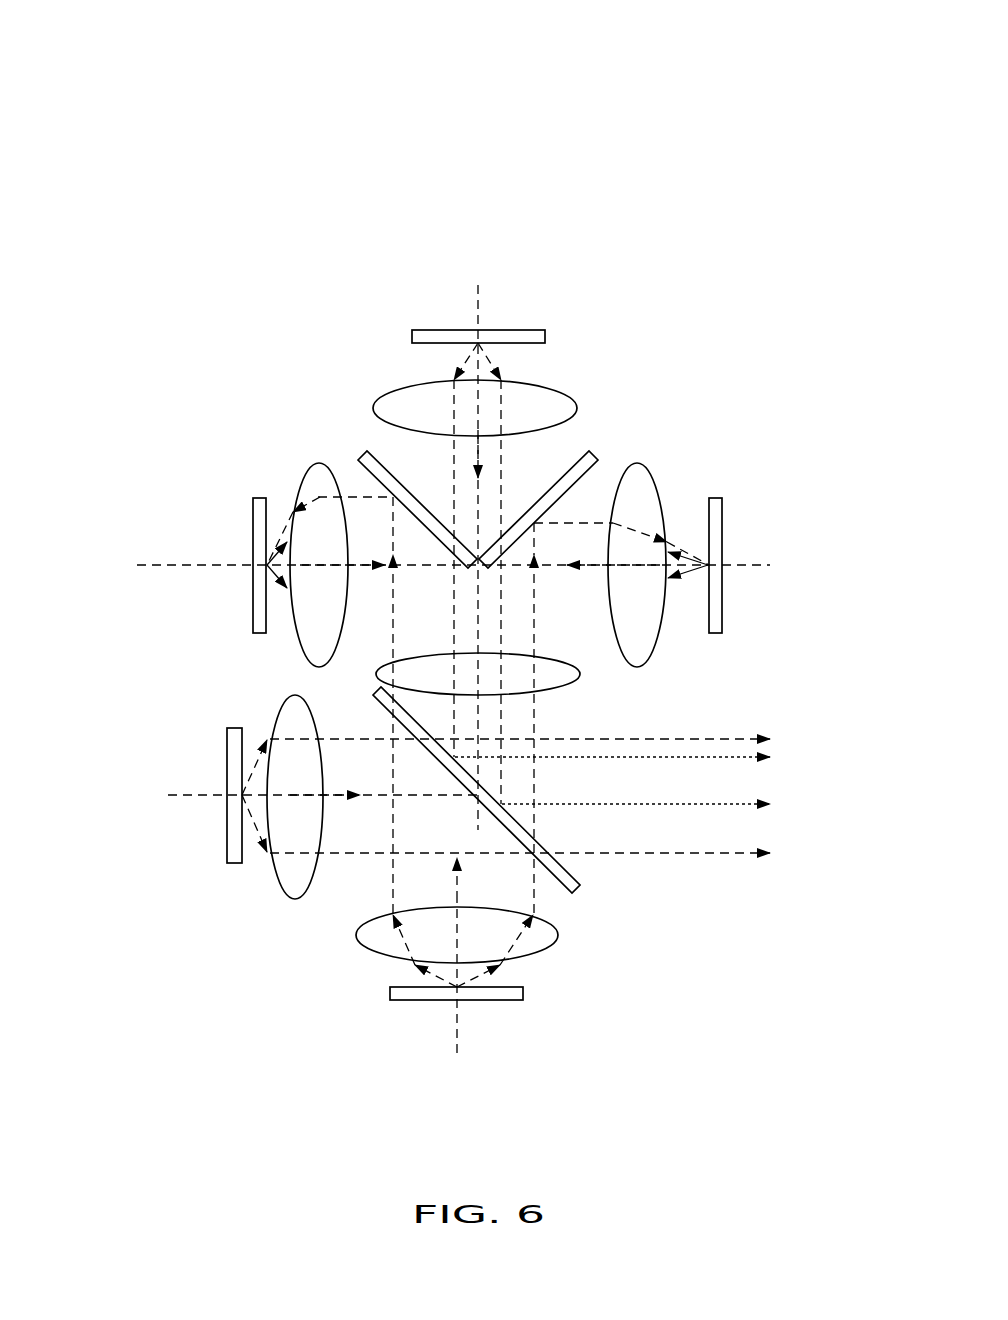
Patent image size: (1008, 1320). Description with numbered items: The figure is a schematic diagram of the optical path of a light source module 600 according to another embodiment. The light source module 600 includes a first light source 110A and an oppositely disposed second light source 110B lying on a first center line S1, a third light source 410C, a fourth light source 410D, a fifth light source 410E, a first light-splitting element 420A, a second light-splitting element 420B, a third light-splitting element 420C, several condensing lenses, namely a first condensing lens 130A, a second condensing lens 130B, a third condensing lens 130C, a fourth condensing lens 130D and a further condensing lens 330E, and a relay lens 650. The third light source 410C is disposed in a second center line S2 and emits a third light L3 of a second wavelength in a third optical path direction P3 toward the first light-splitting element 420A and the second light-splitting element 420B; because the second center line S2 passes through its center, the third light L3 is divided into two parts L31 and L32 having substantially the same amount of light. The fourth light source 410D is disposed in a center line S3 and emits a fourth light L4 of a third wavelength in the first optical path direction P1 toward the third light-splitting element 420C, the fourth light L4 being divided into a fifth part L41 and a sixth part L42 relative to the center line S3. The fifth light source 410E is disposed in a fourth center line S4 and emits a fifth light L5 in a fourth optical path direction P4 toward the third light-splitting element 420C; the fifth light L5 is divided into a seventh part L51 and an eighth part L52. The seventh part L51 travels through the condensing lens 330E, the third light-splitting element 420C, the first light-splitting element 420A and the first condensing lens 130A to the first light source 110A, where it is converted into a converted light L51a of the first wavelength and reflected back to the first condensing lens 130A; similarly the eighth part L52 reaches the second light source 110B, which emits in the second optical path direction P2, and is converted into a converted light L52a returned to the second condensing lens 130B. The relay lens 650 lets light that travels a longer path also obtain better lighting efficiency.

The light source module 600 is at (417, 90).
The third light source 410C is at (425, 330).
The third condensing lens 130C is at (407, 385).
The first light-splitting element 420A is at (362, 455).
The second light-splitting element 420B is at (594, 455).
The first condensing lens 130A is at (319, 463).
The second condensing lens 130B is at (637, 463).
The first light source 110A is at (253, 626).
The second light source 110B is at (722, 610).
The relay lens 650 is at (580, 676).
The third light-splitting element 420C is at (581, 888).
The fourth light source 410D is at (227, 845).
The fourth condensing lens 130D is at (295, 899).
The fourth condensing lens 330E is at (558, 933).
The fifth light source 410E is at (523, 993).
The first center line S1 is at (435, 567).
The second center line S2 is at (478, 544).
The center line S3 is at (310, 797).
The fourth center line S4 is at (457, 991).
The first optical path direction P1 is at (341, 705).
The second optical path direction P2 is at (597, 718).
The third optical path direction P3 is at (486, 462).
The fourth optical path direction P4 is at (439, 879).
The third light L3 is at (543, 222).
The part of the third light L31 is at (503, 376).
The part of the third light L32 is at (452, 376).
The fourth light L4 is at (152, 700).
The fifth part L41 is at (257, 765).
The sixth part L42 is at (257, 823).
The fifth light L5 is at (562, 1100).
The seventh part L51 is at (382, 1072).
The converted light L51a is at (278, 552).
The eighth part L52 is at (487, 972).
The converted light L52a is at (695, 553).